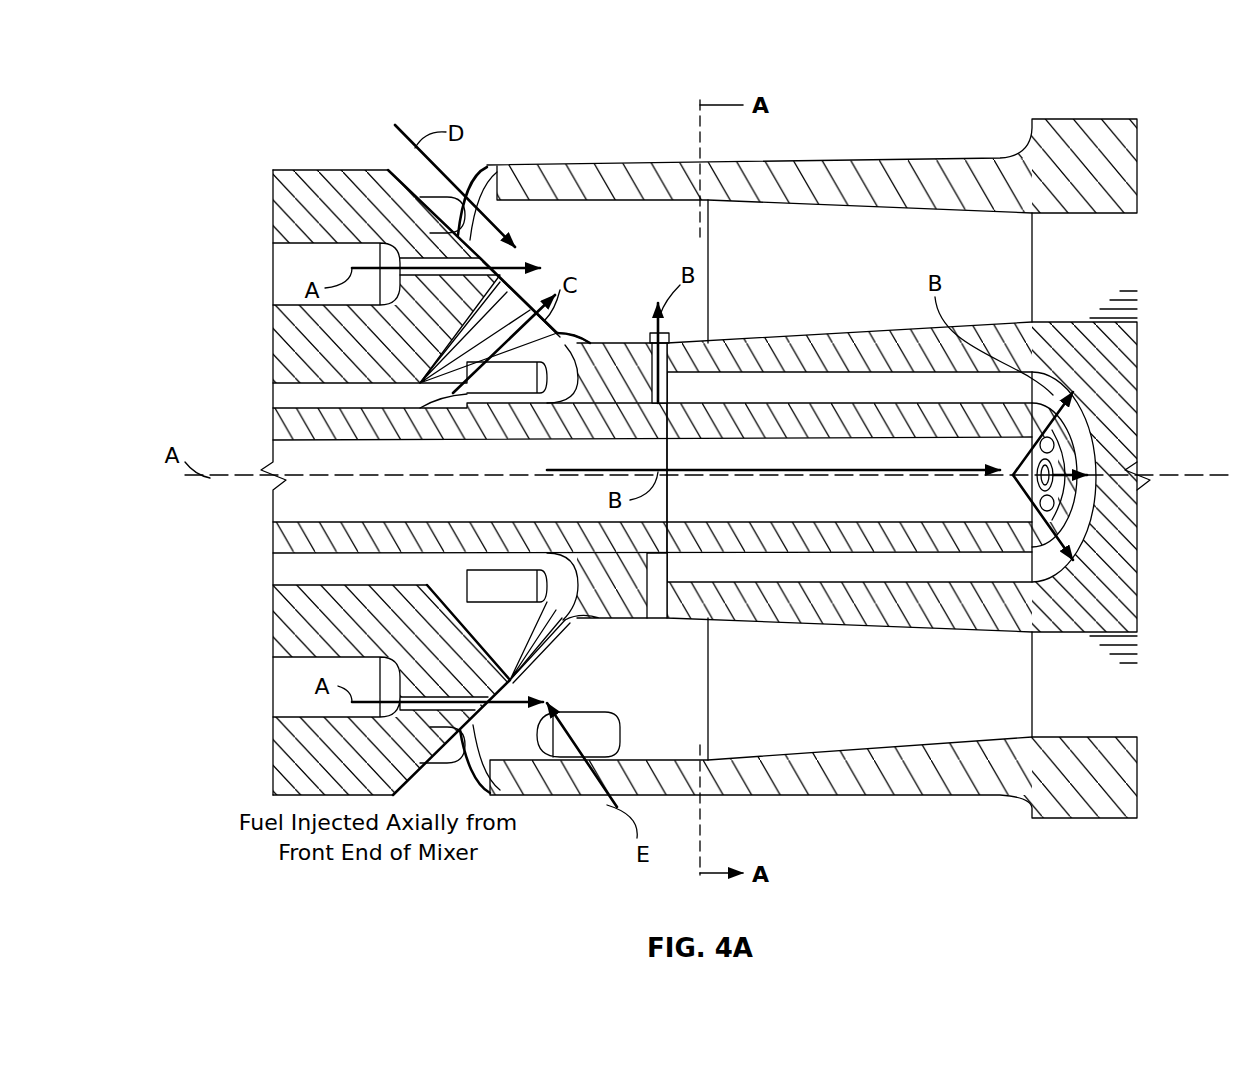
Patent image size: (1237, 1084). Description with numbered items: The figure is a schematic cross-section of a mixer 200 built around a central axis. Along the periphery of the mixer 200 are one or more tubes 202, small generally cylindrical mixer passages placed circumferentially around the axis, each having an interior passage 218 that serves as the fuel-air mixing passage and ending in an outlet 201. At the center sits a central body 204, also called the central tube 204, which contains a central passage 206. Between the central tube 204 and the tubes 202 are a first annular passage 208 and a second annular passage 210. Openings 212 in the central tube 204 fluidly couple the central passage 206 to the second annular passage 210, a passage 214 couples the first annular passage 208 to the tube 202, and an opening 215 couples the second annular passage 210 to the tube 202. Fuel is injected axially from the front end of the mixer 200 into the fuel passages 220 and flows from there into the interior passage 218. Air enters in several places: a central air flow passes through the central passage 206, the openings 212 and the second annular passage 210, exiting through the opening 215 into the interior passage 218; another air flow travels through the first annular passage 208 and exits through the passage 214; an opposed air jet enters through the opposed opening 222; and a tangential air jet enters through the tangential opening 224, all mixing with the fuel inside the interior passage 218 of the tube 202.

The mixer 200 is at (258, 72).
The outlet 201 is at (1090, 272).
The tube 202 is at (505, 150).
The central body 204 is at (266, 545).
The central passage 206 is at (918, 482).
The first annular passage 208 is at (300, 387).
The second annular passage 210 is at (977, 573).
The openings 212 is at (1050, 447).
The passage 214 is at (477, 345).
The opening 215 is at (657, 342).
The interior passage 218 is at (773, 242).
The fuel passage 220 is at (293, 275).
The opposed opening 222 is at (487, 200).
The tangential opening 224 is at (612, 727).